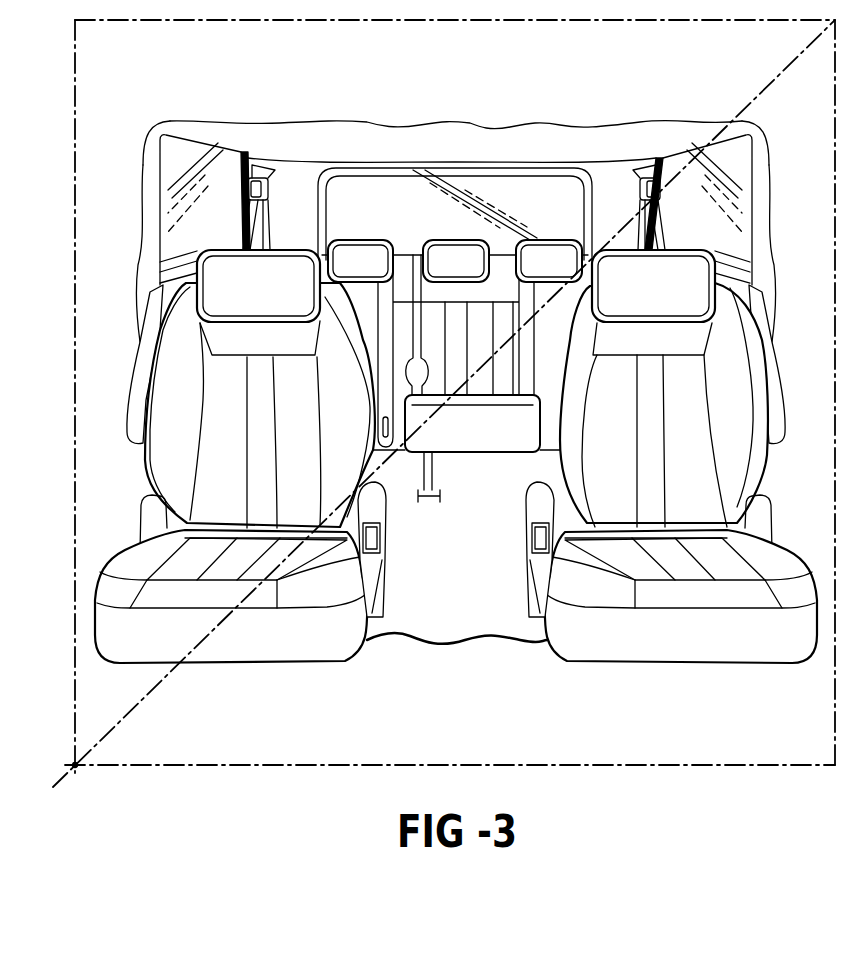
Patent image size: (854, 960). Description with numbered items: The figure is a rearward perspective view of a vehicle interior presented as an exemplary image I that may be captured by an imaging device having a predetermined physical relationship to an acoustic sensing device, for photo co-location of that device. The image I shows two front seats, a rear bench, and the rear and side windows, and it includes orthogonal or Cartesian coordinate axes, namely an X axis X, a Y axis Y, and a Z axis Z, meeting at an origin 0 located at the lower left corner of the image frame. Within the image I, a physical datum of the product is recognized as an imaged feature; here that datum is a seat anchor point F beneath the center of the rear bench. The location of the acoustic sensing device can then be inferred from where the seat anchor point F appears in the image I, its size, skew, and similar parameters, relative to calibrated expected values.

The image I is at (456, 351).
The seat anchor point F is at (430, 506).
The X axis X is at (140, 767).
The Y axis Y is at (75, 709).
The Z axis Z is at (150, 690).
The origin 0 is at (60, 784).